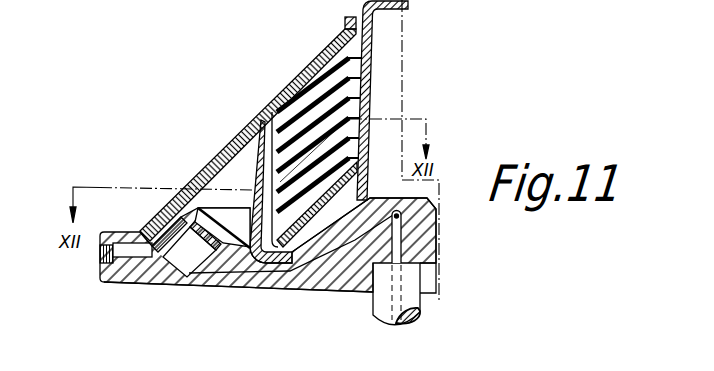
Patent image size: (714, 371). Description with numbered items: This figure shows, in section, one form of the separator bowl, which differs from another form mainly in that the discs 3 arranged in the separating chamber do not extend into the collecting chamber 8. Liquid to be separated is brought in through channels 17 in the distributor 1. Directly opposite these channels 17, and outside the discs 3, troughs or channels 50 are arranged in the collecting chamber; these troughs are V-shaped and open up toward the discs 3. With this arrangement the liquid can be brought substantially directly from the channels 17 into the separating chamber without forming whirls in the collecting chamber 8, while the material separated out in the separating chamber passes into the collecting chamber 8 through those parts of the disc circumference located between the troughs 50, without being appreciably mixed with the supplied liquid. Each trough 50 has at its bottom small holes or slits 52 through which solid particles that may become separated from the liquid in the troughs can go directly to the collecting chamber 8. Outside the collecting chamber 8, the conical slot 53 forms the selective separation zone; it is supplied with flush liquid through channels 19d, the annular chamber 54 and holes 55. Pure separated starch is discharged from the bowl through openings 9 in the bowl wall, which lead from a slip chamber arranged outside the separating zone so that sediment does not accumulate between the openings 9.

The distributor 1 is at (370, 98).
The discs 3 is at (318, 105).
The collecting chamber 8 is at (238, 239).
The openings 9 is at (103, 252).
The channels 17 is at (315, 225).
The channels 19d is at (256, 274).
The troughs 50 is at (257, 167).
The holes or slits 52 is at (262, 122).
The conical slot 53 is at (160, 236).
The annular chamber 54 is at (181, 257).
The holes 55 is at (158, 238).